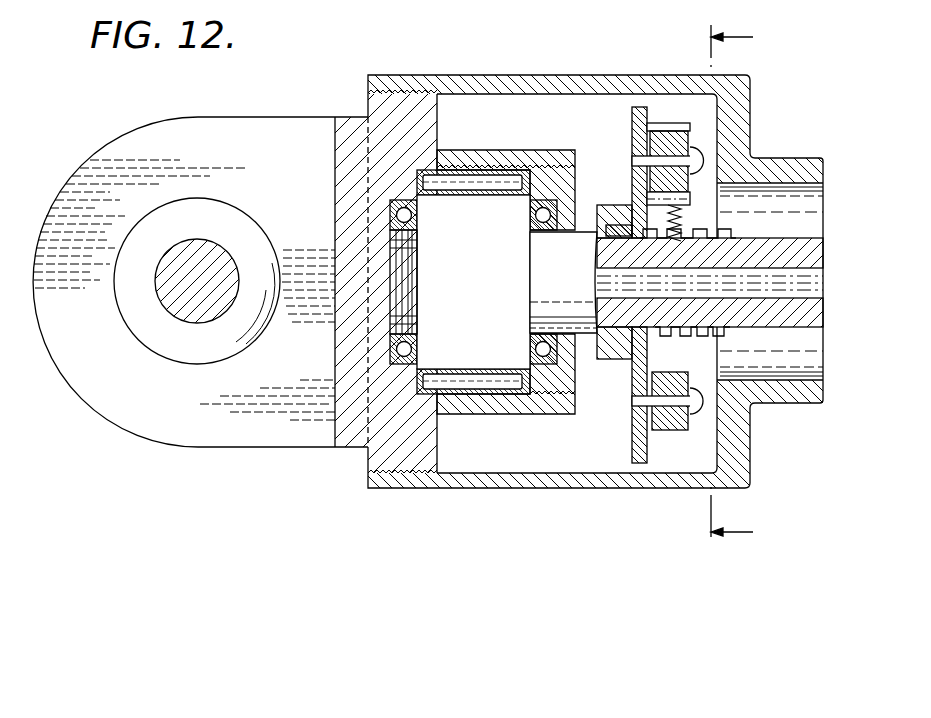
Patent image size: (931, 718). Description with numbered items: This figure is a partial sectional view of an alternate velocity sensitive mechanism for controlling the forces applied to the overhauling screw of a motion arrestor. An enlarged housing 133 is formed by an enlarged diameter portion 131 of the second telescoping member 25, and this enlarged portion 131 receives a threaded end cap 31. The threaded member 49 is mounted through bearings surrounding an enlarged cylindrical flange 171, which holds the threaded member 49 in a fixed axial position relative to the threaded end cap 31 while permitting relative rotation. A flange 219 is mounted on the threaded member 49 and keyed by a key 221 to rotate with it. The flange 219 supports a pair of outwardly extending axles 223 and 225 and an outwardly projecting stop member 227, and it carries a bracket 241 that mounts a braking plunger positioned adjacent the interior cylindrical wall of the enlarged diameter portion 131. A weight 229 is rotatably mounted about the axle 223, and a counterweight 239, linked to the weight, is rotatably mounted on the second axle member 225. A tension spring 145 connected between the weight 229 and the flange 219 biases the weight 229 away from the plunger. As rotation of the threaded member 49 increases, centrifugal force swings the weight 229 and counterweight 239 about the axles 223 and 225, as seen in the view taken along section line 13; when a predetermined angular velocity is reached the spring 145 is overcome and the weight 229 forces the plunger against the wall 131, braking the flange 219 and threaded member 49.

The section line 13- 13 is at (751, 287).
The second telescoping member 25 is at (793, 165).
The threaded end cap 31 is at (372, 101).
The threaded member 49 is at (747, 250).
The enlarged diameter portion 131 is at (464, 82).
The enlarged housing 133 is at (533, 99).
The tension spring 145 is at (680, 218).
The enlarged cylindrical flange 171 is at (494, 291).
The flange 219 is at (640, 435).
The key 221 is at (607, 240).
The axle 223 is at (680, 160).
The second axle member 225 is at (661, 403).
The stop member 227 is at (660, 197).
The weight 229 is at (663, 180).
The counterweight 239 is at (667, 385).
The bracket 241 is at (655, 128).